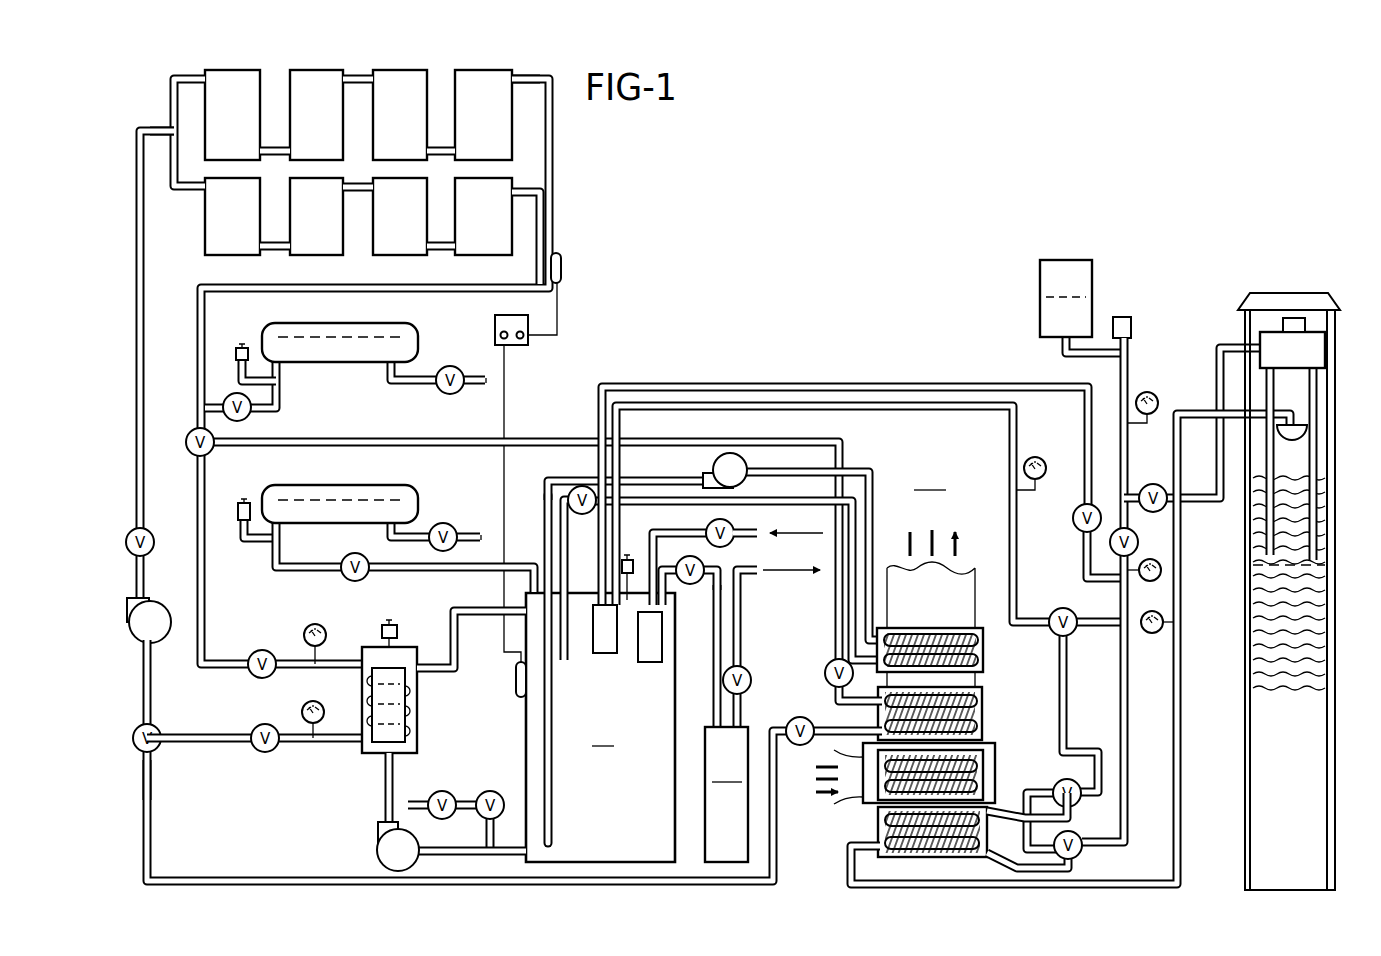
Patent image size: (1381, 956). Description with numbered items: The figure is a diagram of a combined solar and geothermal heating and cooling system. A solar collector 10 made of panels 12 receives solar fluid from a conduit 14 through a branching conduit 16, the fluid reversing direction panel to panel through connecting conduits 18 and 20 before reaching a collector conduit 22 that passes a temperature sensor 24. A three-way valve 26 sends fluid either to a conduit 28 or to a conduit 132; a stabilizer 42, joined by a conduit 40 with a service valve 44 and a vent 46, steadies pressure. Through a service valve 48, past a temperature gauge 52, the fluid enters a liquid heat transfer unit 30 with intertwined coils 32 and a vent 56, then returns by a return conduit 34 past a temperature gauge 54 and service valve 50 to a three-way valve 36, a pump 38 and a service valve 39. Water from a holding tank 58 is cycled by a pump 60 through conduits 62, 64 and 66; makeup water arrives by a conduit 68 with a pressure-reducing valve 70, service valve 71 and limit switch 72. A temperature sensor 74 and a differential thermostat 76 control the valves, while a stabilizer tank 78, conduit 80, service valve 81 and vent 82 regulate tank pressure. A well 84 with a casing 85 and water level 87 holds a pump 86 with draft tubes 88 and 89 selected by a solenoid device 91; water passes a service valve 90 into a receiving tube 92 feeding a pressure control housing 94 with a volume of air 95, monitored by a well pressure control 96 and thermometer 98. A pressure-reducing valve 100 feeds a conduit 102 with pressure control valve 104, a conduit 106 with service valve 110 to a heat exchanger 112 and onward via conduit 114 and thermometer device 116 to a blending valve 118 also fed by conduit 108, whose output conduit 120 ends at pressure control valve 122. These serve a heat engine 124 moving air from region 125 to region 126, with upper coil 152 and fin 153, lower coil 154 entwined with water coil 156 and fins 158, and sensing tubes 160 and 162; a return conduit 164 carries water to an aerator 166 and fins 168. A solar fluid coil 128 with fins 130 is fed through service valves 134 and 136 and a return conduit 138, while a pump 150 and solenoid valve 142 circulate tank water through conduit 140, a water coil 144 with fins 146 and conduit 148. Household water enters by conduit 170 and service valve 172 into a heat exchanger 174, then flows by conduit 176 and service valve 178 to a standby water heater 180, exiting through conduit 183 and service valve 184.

The solar collector 10 is at (339, 62).
The panels 12 is at (287, 72).
The conduit 14 is at (145, 273).
The branching conduit 16 is at (150, 128).
The connecting conduits 18 is at (545, 72).
The connecting conduits 20 is at (535, 188).
The collector conduit 22 is at (555, 207).
The temperature sensor 24 is at (565, 270).
The three-way valve 26 is at (190, 430).
The conduit 28 is at (204, 588).
The liquid heat transfer unit 30 is at (410, 640).
The intertwined coils 32 is at (420, 738).
The return conduit 34 is at (332, 746).
The three-way valve 36 is at (158, 726).
The pump 38 is at (157, 600).
The service valve 39 is at (154, 530).
The conduit 40 is at (282, 392).
The stabilizer 42 is at (265, 321).
The service valve 44 is at (228, 394).
The vent 46 is at (236, 345).
The service valve 48 is at (261, 650).
The service valve 50 is at (258, 724).
The temperature gauge 52 is at (306, 626).
The temperature gauge 54 is at (314, 700).
The vent 56 is at (378, 630).
The holding tank 58 is at (600, 727).
The pump 60 is at (376, 848).
The conduit 62 is at (462, 846).
The conduit 64 is at (383, 790).
The conduit 66 is at (464, 648).
The conduit 68 is at (466, 800).
The pressure-reducing valve 70 is at (492, 790).
The service valve 71 is at (436, 790).
The limit switch 72 is at (626, 559).
The temperature sensor 74 is at (514, 684).
The differential thermostat 76 is at (493, 323).
The stabilizer tank 78 is at (398, 486).
The conduit 80 is at (297, 576).
The service valve 81 is at (368, 580).
The vent 82 is at (235, 510).
The well 84 is at (1342, 540).
The casing 85 is at (1340, 720).
The pump 86 is at (1326, 350).
The water level 87 is at (1330, 510).
The draft tube 88 is at (1274, 394).
The draft tube 89 is at (1318, 406).
The service valve 90 is at (1153, 484).
The solenoid device 91 is at (1292, 318).
The receiving tube 92 is at (1118, 504).
The pressure control housing 94 is at (1076, 254).
The volume of air 95 is at (1038, 270).
The well pressure control 96 is at (1122, 316).
The thermometer 98 is at (1147, 392).
The pressure-reducing valve 100 is at (1138, 542).
The conduit 102 is at (1128, 688).
The pressure control valve 104 is at (1078, 838).
The conduit 106 is at (752, 382).
The conduit 108 is at (1092, 616).
The service valve 110 is at (1070, 518).
The heat exchanger 112 is at (606, 658).
The conduit 114 is at (904, 412).
The thermometer device 116 is at (1036, 456).
The blending valve 118 is at (1054, 606).
The conduit 120 is at (1067, 700).
The pressure control valve 122 is at (1074, 780).
The heat engine 124 is at (1000, 746).
The household region 125 is at (834, 760).
The household region 126 is at (931, 578).
The solar fluid coil 128 is at (984, 700).
The heat transfer fins 130 is at (984, 724).
The conduit 132 is at (364, 436).
The service valve 134 is at (826, 675).
The service valve 136 is at (800, 720).
The return conduit 138 is at (234, 878).
The conduit 140 is at (559, 536).
The solenoid valve 142 is at (585, 488).
The water coil 144 is at (985, 642).
The heat transfer fins 146 is at (938, 632).
The conduit 148 is at (540, 494).
The pump 150 is at (706, 466).
The upper coil 152 is at (984, 766).
The fin 153 is at (984, 786).
The lower coil 154 is at (878, 824).
The water coil 156 is at (952, 860).
The thermal transfer fins 158 is at (878, 856).
The connecting and sensing tube 160 is at (1069, 818).
The connecting and sensing tube 162 is at (1080, 868).
The return conduit 164 is at (1146, 882).
The aerator 166 is at (1307, 428).
The fins 168 is at (1250, 600).
The conduit 170 is at (752, 546).
The service valve 172 is at (706, 528).
The heat exchanger 174 is at (652, 662).
The conduit 176 is at (668, 604).
The service valve 178 is at (688, 568).
The standby water heater 180 is at (726, 794).
The conduit 183 is at (742, 636).
The service valve 184 is at (748, 664).